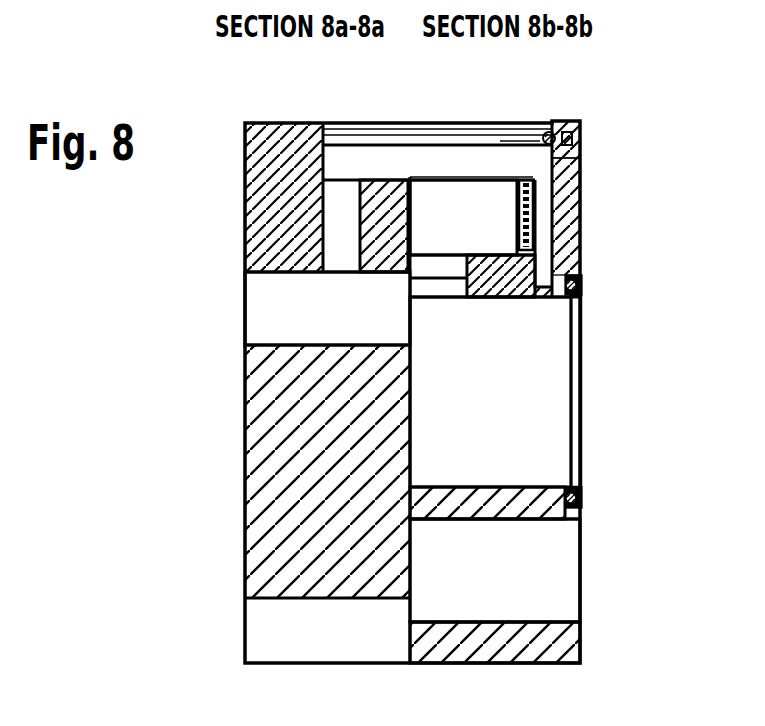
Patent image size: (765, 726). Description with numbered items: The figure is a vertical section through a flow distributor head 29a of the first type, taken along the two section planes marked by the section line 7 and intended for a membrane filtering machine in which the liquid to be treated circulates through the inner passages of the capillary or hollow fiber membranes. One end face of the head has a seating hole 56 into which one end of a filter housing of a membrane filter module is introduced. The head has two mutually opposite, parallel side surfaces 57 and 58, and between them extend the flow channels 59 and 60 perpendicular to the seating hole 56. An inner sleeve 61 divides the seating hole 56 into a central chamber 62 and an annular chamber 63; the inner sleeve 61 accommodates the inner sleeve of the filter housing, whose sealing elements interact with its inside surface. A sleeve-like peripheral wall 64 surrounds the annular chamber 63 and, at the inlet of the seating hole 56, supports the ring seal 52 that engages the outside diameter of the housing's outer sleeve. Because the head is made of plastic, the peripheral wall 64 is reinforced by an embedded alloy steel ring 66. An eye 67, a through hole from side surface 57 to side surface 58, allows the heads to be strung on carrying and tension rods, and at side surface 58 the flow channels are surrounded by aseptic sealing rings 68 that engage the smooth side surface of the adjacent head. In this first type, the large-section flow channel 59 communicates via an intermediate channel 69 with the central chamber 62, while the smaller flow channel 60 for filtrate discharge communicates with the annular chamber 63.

The section line 7- 7 is at (409, 90).
The flow distributor head 29a is at (585, 109).
The ring seal 52 is at (438, 142).
The seating hole 56 is at (478, 172).
The side surface 57 is at (245, 158).
The side surface 58 is at (580, 170).
The flow channel 59 is at (548, 444).
The flow channel 60 is at (262, 327).
The inner sleeve 61 is at (535, 210).
The central chamber 62 is at (428, 222).
The annular chamber 63 is at (540, 253).
The peripheral wall 64 is at (565, 153).
The alloy steel ring 66 is at (566, 131).
The eye 67 is at (560, 572).
The aseptic sealing ring 68 is at (585, 497).
The intermediate channel 69 is at (466, 289).